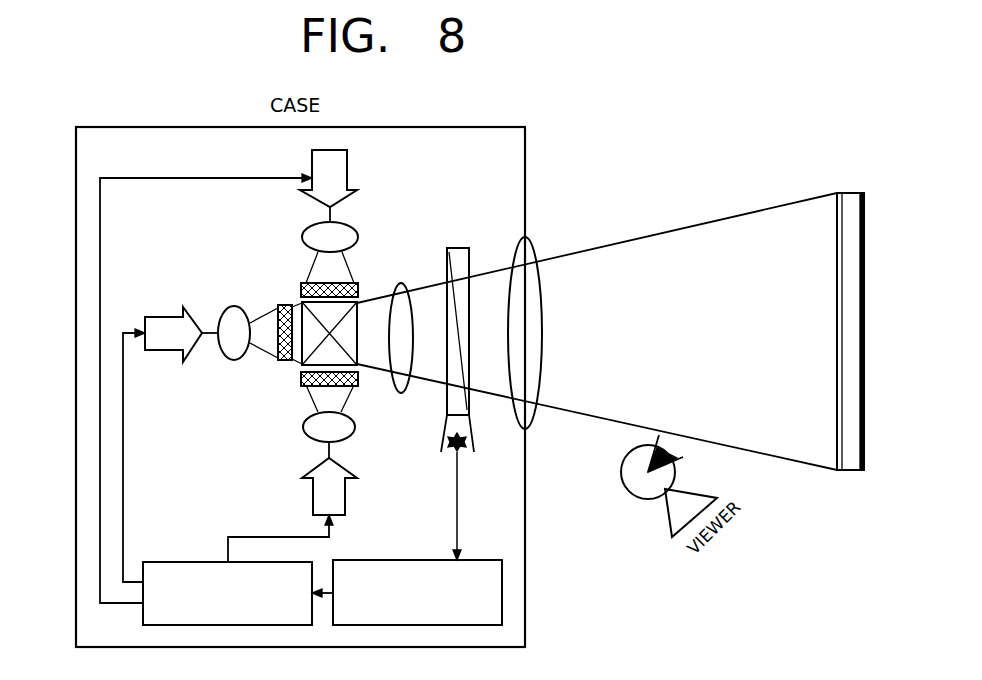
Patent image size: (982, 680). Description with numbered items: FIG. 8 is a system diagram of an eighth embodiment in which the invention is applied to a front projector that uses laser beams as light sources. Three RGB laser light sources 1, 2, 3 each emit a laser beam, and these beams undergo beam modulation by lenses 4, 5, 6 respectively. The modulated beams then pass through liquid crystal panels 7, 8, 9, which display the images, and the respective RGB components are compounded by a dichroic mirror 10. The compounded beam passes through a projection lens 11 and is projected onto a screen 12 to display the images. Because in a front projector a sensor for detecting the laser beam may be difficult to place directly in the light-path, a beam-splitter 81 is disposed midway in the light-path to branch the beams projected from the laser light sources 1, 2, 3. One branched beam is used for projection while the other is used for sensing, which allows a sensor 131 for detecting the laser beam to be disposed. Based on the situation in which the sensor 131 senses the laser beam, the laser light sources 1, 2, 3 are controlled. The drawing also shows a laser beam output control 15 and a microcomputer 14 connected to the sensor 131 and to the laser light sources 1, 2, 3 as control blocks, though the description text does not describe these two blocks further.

The laser light source 1 is at (167, 312).
The laser light source 2 is at (347, 170).
The laser light source 3 is at (312, 496).
The lens 4 is at (234, 305).
The lens 5 is at (345, 222).
The lens 6 is at (304, 440).
The liquid crystal panel 7 is at (281, 304).
The liquid crystal panel 8 is at (355, 280).
The liquid crystal panel 9 is at (358, 385).
The dichroic mirror 10 is at (302, 364).
The projection lens 11 is at (405, 283).
The beam-splitter 81 is at (466, 246).
The sensor 131 is at (463, 450).
The screen 12 is at (843, 472).
The microcomputer 14 is at (383, 560).
The laser beam output control 15 is at (184, 560).